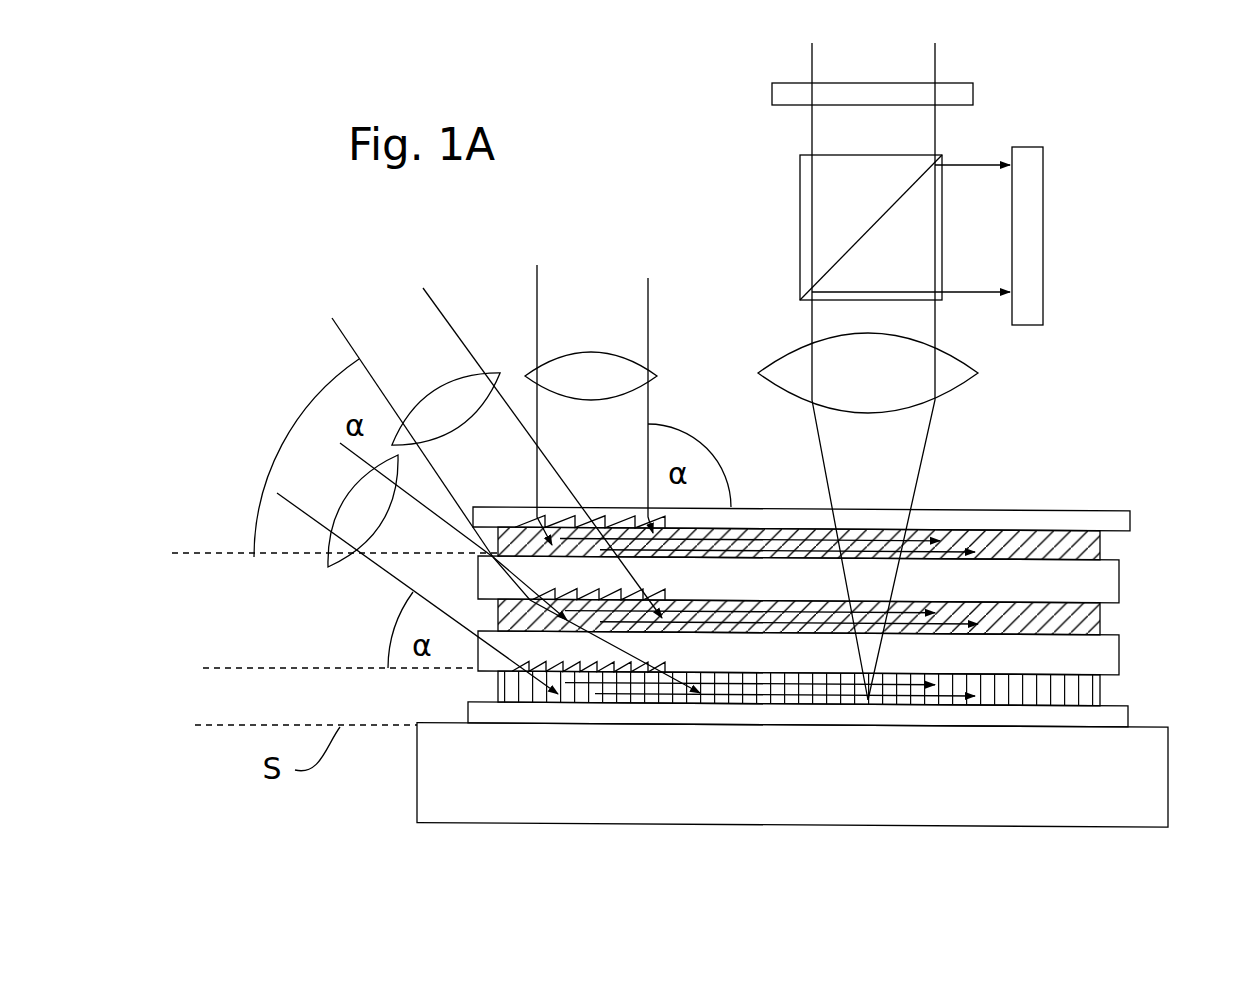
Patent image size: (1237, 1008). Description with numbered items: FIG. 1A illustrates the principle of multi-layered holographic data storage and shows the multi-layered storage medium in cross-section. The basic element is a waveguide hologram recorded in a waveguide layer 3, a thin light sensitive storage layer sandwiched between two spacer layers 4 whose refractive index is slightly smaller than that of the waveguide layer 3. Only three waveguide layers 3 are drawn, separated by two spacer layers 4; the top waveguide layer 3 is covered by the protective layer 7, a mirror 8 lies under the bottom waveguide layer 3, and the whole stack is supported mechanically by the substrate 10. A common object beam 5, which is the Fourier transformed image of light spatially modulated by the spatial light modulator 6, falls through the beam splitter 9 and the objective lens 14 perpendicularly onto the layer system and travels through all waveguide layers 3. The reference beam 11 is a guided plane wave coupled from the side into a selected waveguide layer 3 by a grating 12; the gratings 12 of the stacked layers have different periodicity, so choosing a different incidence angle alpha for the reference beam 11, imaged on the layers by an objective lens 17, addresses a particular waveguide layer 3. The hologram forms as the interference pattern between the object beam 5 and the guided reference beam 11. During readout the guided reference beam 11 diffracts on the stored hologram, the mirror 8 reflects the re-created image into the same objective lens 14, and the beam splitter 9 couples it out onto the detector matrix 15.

The waveguide layer 3 is at (1100, 553).
The spacer layer 4 is at (1100, 581).
The object beam 5 is at (927, 458).
The spatial light modulator 6 is at (978, 95).
The protective layer 7 is at (1062, 517).
The mirror 8 is at (1122, 717).
The beam splitter 9 is at (805, 173).
The substrate 10 is at (1003, 805).
The reference beam 11 is at (357, 358).
The grating 12 is at (606, 507).
The objective lens 14 is at (940, 380).
The detector matrix 15 is at (1030, 248).
The objective lens 17 is at (462, 386).